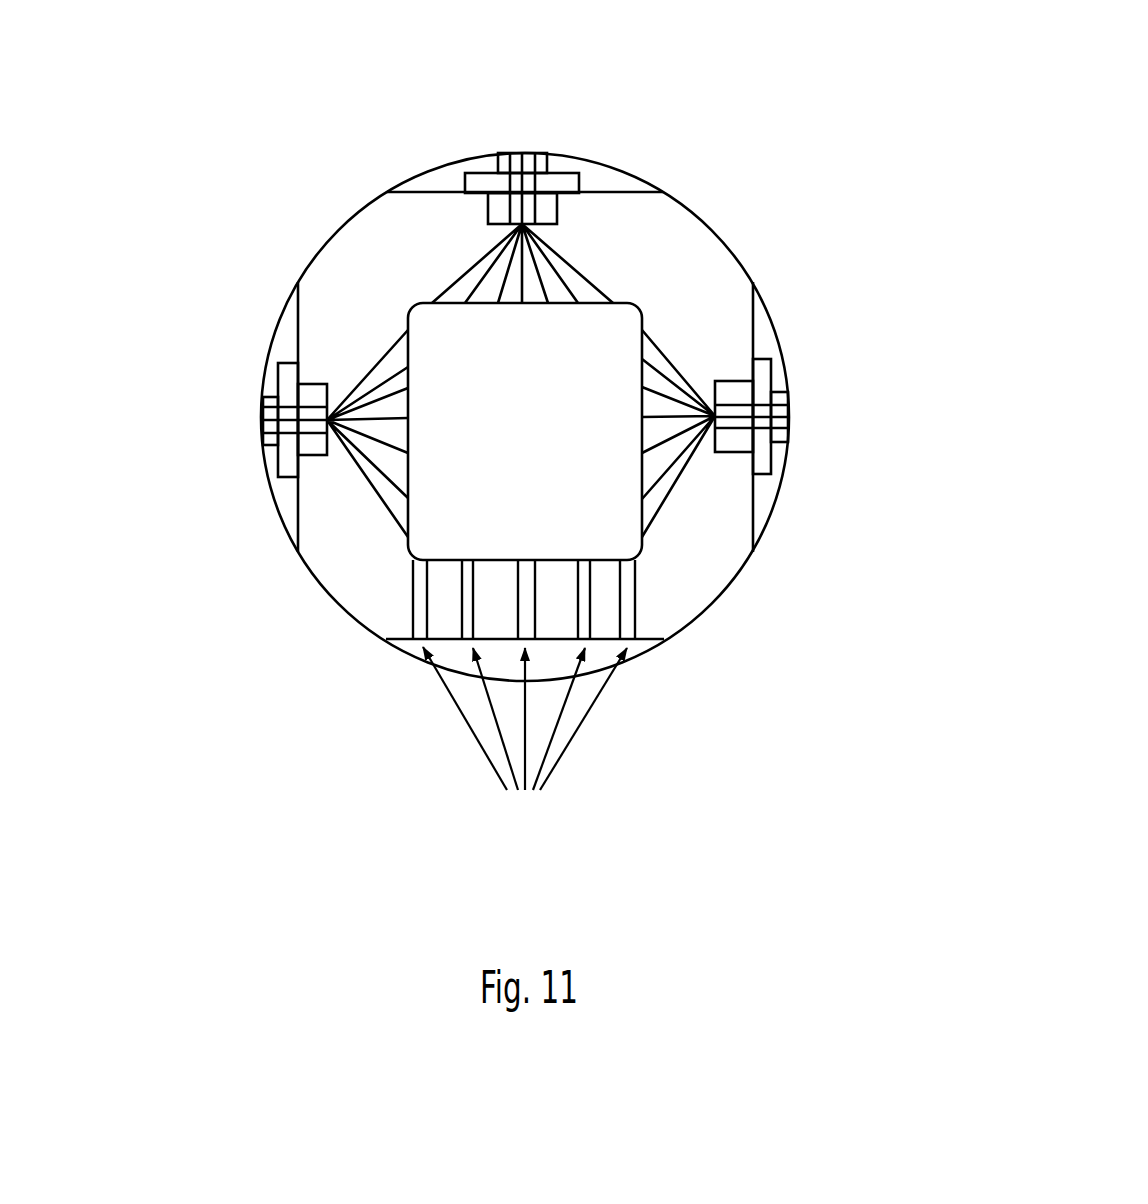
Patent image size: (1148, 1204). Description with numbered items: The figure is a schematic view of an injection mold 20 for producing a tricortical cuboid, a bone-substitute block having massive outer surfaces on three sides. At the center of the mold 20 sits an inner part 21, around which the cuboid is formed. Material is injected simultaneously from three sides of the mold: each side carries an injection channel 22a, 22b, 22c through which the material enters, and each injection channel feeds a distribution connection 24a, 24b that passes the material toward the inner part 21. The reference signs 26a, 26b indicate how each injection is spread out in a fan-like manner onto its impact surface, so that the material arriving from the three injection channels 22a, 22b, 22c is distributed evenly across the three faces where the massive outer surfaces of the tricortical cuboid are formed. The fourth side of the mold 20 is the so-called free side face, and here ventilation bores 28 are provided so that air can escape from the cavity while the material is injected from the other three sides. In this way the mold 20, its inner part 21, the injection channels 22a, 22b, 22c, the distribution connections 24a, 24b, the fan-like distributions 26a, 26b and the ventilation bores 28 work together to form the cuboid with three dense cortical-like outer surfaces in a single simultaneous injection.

The injection mold 20 is at (752, 128).
The inner part 21 is at (590, 358).
The injection channel 22a is at (790, 435).
The injection channel 22b is at (550, 160).
The injection channel 22c is at (267, 392).
The distribution connection 24a is at (760, 457).
The distribution connection 24b is at (475, 183).
The fan-like distribution of injection 26a is at (677, 500).
The fan-like distribution of injection 26b is at (453, 275).
The ventilation bores 28 is at (525, 747).